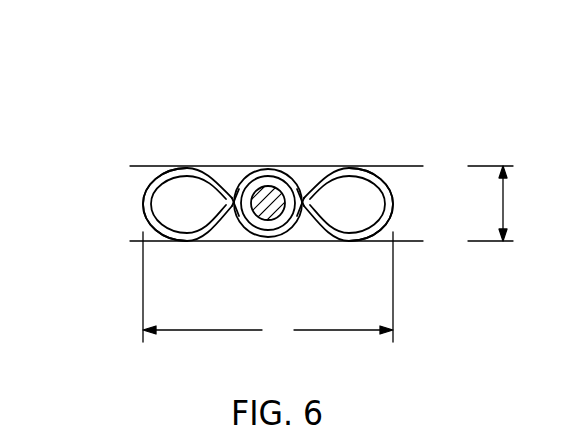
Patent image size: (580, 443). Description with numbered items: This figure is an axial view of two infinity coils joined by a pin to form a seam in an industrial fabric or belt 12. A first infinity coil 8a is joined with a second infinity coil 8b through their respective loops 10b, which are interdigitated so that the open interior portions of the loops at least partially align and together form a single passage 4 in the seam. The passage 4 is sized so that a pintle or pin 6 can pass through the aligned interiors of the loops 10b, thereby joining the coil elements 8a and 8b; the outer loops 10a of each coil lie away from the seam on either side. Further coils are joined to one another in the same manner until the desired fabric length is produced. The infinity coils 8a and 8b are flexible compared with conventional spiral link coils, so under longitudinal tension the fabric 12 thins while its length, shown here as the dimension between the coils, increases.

The industrial fabric/belt 12 is at (413, 54).
The passage 4 is at (265, 224).
The pintle or pin 6 is at (271, 186).
The first infinity coil 8a is at (146, 194).
The second infinity coil 8b is at (389, 185).
The loops 10a is at (145, 206).
The loops 10b is at (231, 219).